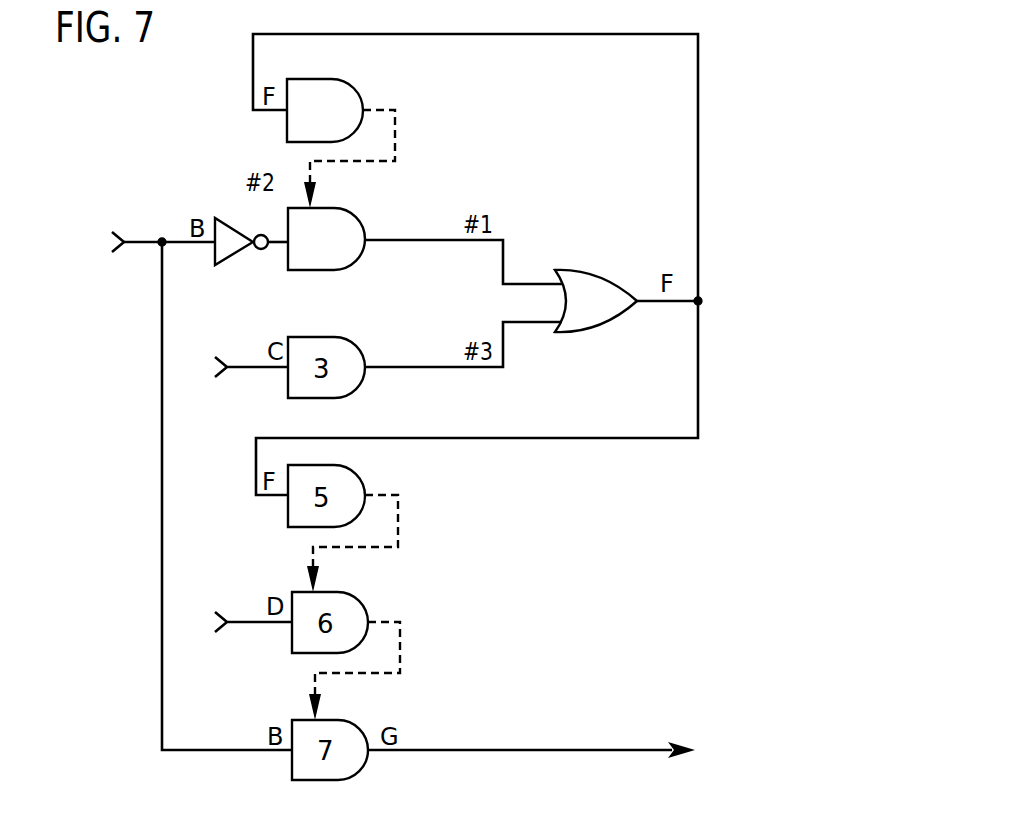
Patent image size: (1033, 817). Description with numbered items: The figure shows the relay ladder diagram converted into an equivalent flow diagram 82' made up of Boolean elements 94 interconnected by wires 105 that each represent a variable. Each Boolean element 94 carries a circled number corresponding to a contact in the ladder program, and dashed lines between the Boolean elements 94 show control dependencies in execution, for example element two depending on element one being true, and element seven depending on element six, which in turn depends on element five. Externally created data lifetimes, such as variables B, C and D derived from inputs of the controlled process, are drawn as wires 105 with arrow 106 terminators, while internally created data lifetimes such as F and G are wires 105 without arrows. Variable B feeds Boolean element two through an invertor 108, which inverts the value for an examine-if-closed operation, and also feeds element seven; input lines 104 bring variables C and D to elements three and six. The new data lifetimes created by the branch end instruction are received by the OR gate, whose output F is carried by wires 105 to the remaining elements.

The flow diagram 82' is at (771, 118).
The Boolean elements 94 is at (355, 90).
The input line 104 is at (248, 372).
The wires 105 is at (162, 236).
The arrow 106 is at (118, 232).
The invertor 108 is at (230, 262).